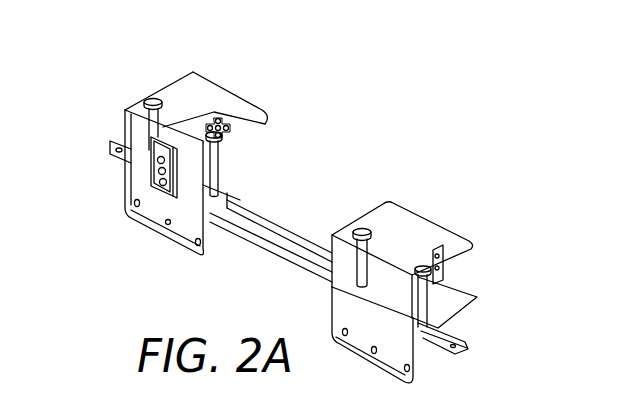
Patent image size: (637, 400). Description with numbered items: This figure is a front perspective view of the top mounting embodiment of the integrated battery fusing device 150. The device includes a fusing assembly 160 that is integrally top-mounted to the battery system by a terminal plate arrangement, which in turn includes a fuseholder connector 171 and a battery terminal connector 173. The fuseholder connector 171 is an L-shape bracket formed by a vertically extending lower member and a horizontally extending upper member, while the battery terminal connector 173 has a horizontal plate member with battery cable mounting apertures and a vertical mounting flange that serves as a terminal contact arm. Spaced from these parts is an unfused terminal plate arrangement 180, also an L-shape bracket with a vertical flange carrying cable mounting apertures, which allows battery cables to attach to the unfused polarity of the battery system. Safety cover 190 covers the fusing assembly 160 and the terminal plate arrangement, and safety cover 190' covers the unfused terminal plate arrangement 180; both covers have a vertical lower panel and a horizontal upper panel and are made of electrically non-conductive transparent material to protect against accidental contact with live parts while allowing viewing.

The integrated battery fusing device 150 is at (158, 80).
The fusing assembly 160 is at (185, 137).
The fuseholder connector 171 is at (177, 218).
The battery terminal connector 173 is at (212, 112).
The safety cover 190 is at (261, 99).
The safety cover 190' is at (422, 217).
The unfused terminal plate arrangement 180 is at (452, 297).